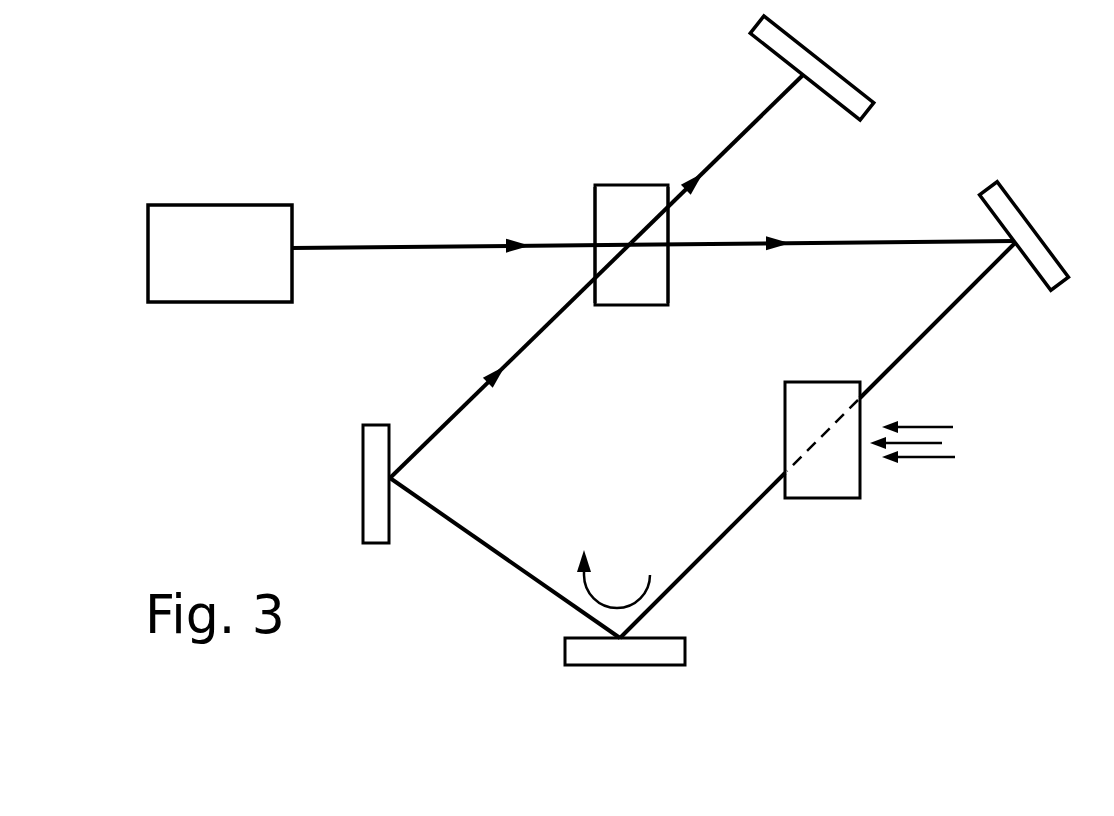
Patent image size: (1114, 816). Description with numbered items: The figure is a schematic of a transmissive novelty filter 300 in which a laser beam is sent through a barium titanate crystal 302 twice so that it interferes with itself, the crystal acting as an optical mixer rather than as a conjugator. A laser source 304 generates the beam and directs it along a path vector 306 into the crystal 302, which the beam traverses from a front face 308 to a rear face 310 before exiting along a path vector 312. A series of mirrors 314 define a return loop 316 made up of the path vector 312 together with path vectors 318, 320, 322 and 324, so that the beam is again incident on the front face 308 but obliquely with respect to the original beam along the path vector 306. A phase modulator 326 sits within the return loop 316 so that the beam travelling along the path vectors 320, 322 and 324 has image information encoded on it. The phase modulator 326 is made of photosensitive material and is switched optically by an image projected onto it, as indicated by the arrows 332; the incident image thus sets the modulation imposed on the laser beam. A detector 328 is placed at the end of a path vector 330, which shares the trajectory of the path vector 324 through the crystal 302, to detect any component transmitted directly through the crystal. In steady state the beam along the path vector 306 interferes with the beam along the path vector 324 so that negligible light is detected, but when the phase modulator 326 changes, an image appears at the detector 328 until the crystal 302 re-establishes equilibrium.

The transmissive novelty filter 300 is at (262, 152).
The barium titanate crystal 302 is at (613, 293).
The laser source 304 is at (193, 278).
The path vector 306 is at (452, 246).
The front face 308 is at (594, 210).
The rear face 310 is at (669, 275).
The path vector 312 is at (741, 241).
The mirrors 314 is at (1040, 293).
The return loop 316 is at (649, 573).
The path vector 318 is at (903, 355).
The path vector 320 is at (699, 559).
The path vector 322 is at (523, 577).
The path vector 324 is at (442, 433).
The phase modulator 326 is at (810, 498).
The detector 328 is at (841, 115).
The path vector 330 is at (760, 117).
The arrows 332 is at (933, 426).